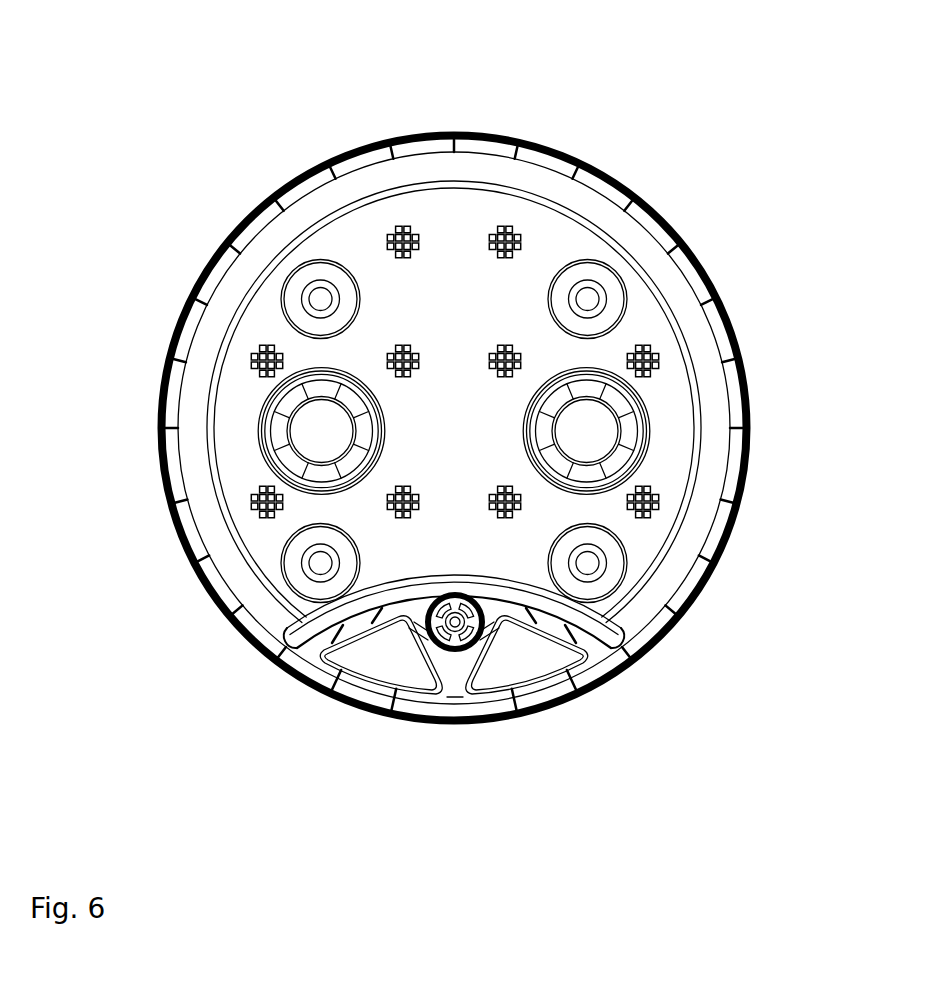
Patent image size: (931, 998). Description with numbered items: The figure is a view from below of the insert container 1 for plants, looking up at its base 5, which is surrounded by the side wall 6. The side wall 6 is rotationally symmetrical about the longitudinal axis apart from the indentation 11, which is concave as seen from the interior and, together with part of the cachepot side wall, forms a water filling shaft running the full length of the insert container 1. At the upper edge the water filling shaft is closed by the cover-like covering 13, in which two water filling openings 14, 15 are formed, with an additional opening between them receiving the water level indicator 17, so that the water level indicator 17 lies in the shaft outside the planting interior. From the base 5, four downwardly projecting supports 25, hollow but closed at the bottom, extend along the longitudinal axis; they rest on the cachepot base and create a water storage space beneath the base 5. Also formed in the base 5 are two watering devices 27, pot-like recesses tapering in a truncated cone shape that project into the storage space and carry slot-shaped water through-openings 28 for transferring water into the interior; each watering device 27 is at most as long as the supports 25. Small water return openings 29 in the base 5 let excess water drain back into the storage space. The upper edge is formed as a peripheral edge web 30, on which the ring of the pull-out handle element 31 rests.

The insert container 1 is at (457, 434).
The base 5 is at (453, 441).
The side wall 6 is at (355, 192).
The indentation 11 is at (407, 593).
The covering 13 is at (455, 683).
The water filling opening 14 is at (543, 667).
The water filling opening 15 is at (383, 667).
The water level indicator 17 is at (490, 627).
The supports 25 is at (318, 268).
The watering devices 27 is at (255, 422).
The water through-openings 28 is at (303, 393).
The water return openings 29 is at (252, 505).
The edge web 30 is at (488, 152).
The handle element 31 is at (697, 262).